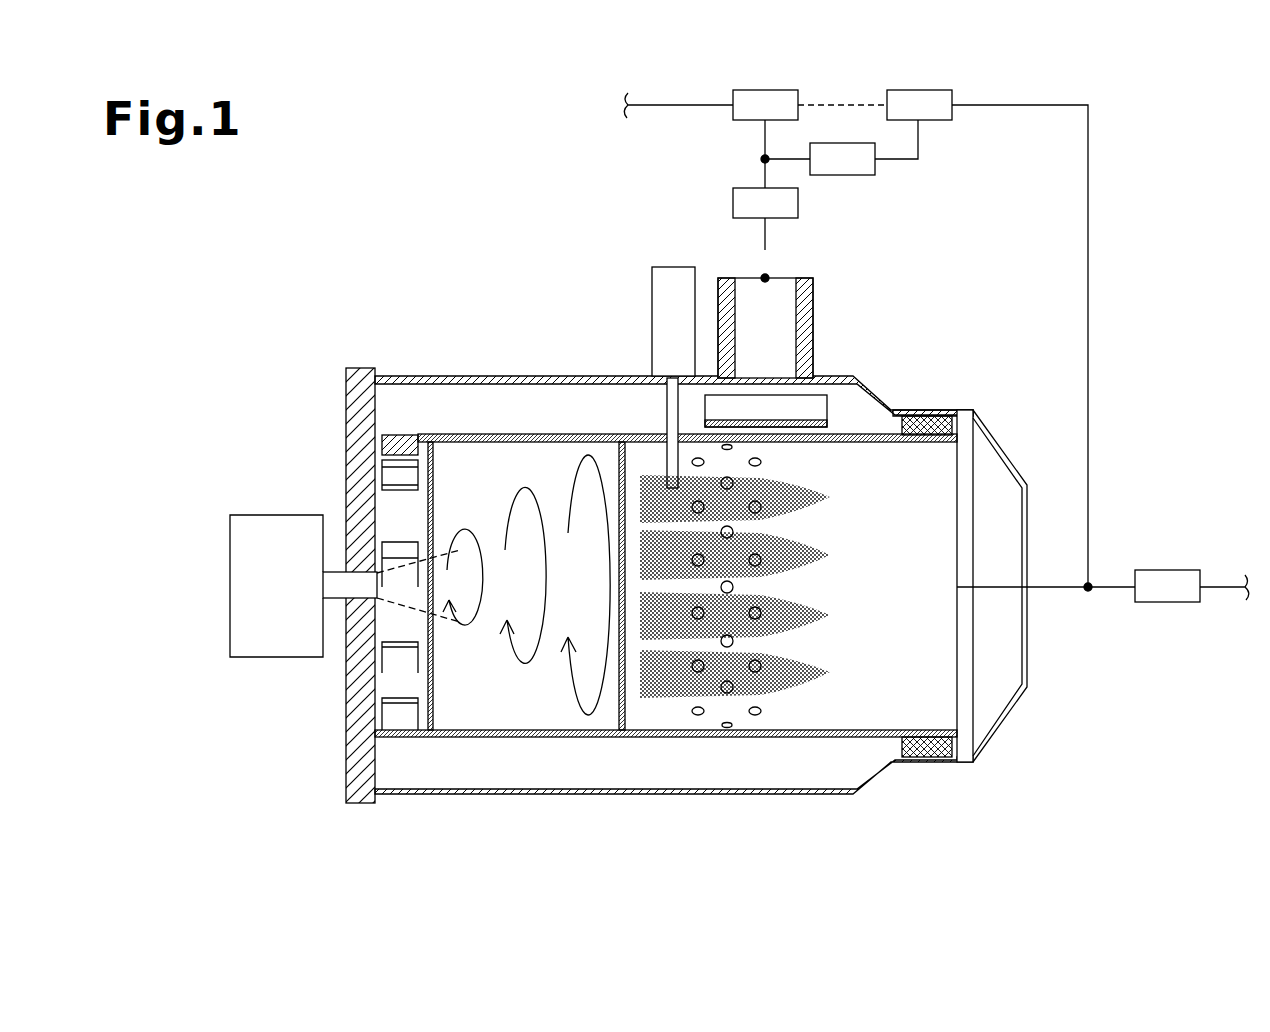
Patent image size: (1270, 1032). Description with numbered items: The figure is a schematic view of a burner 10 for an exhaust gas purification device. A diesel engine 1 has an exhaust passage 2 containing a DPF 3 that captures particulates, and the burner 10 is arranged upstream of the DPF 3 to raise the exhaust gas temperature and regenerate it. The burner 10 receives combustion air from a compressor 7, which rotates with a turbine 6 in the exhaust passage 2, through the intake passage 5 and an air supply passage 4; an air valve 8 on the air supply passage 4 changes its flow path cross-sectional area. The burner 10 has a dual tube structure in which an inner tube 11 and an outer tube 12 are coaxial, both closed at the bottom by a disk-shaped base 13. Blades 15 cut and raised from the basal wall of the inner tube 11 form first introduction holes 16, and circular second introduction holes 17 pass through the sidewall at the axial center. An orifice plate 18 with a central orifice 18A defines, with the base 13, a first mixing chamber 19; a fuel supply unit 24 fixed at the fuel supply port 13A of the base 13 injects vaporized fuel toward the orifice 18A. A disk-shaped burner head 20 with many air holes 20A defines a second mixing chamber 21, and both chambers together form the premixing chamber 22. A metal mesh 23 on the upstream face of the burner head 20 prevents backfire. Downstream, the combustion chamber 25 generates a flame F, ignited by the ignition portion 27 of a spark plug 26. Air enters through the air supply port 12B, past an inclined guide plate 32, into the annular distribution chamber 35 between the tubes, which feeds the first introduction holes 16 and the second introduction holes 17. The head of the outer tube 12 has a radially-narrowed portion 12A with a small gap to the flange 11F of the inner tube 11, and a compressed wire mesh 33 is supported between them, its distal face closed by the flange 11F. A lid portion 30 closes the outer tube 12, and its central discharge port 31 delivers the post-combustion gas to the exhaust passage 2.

The diesel engine 1 is at (841, 147).
The exhaust passage 2 is at (1088, 212).
The DPF 3 is at (1170, 570).
The air supply passage 4 is at (813, 312).
The intake passage 5 is at (765, 143).
The turbine 6 is at (919, 106).
The compressor 7 is at (755, 106).
The air valve 8 is at (765, 219).
The burner 10 is at (241, 280).
The inner tube 11 is at (472, 434).
The flange 11F is at (965, 428).
The outer tube 12 is at (548, 376).
The radially-narrowed portion 12A is at (910, 410).
The air supply port 12B is at (735, 380).
The base 13 is at (346, 392).
The fuel supply port 13A is at (360, 592).
The blades 15 is at (382, 456).
The first introduction holes 16 is at (403, 543).
The second introduction holes 17 is at (764, 558).
The orifice plate 18 is at (433, 466).
The orifice 18A is at (437, 624).
The first mixing chamber 19 is at (418, 737).
The burner head 20 is at (620, 440).
The air holes 20A is at (620, 625).
The second mixing chamber 21 is at (502, 737).
The premixing chamber 22 is at (397, 770).
The metal mesh 23 is at (625, 735).
The fuel supply unit 24 is at (252, 515).
The combustion chamber 25 is at (902, 593).
The spark plug 26 is at (652, 297).
The ignition portion 27 is at (662, 484).
The lid portion 30 is at (1000, 448).
The discharge port 31 is at (1028, 487).
The guide plate 32 is at (827, 397).
The wire mesh 33 is at (915, 437).
The distribution chamber 35 is at (758, 779).
The flame F is at (760, 480).